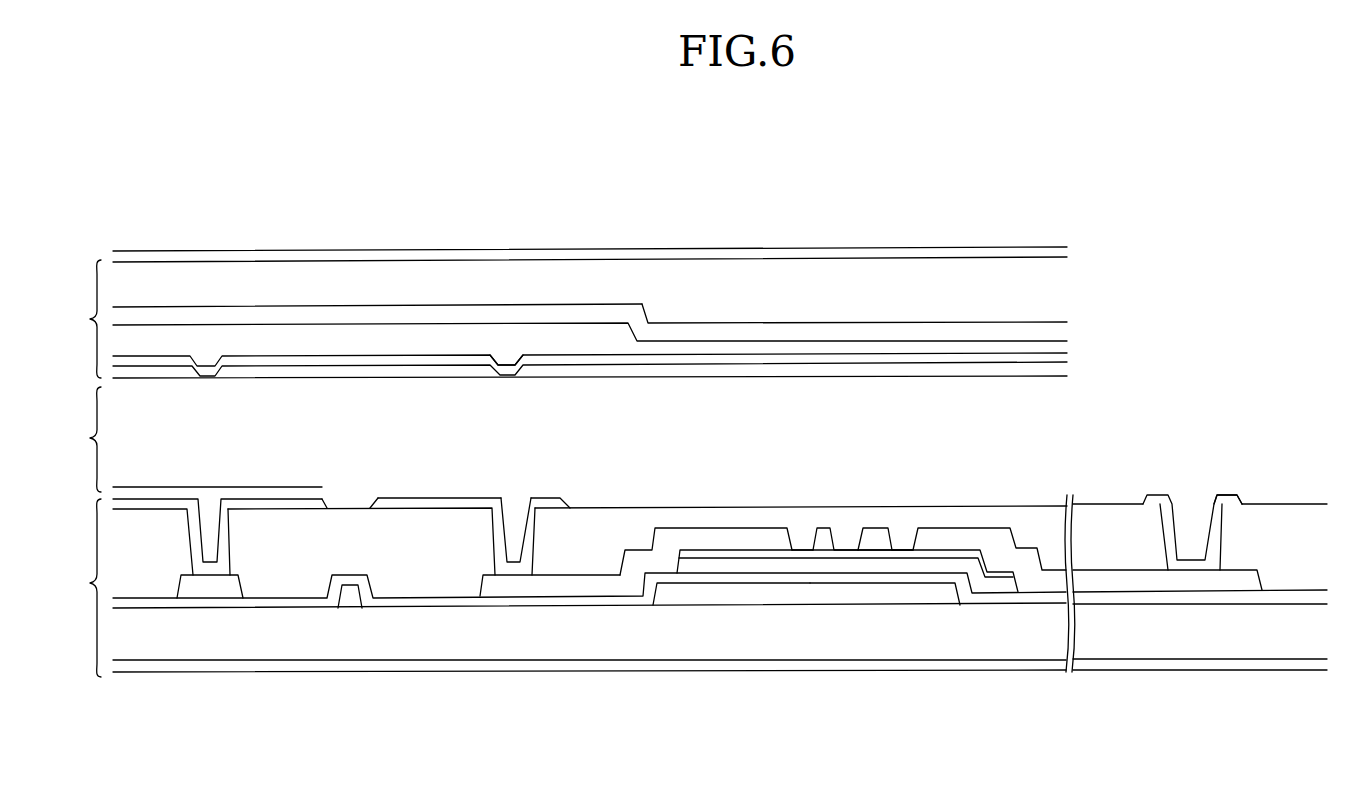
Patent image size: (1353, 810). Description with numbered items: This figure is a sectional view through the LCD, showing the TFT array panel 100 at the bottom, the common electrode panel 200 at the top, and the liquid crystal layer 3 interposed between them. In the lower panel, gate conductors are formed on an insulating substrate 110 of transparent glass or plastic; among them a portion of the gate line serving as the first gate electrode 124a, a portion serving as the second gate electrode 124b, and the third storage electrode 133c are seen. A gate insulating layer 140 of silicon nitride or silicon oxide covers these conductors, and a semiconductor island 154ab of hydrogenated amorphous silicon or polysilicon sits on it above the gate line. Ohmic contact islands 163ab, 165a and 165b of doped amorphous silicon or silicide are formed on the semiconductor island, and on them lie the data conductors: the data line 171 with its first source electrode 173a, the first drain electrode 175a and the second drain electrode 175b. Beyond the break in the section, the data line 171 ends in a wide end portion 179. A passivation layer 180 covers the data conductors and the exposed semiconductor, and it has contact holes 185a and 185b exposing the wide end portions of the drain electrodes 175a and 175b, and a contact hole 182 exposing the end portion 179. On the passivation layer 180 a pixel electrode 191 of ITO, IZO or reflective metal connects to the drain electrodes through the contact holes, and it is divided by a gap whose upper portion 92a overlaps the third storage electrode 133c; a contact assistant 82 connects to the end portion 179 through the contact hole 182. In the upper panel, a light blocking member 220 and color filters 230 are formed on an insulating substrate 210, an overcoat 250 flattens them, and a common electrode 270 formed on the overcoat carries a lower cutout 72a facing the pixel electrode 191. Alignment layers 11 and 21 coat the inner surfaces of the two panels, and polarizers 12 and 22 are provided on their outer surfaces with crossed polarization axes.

The polarizer 22 is at (187, 256).
The insulating substrate 210 is at (260, 270).
The color filter 230 is at (337, 315).
The light blocking member 220 is at (743, 314).
The overcoat 250 is at (488, 340).
The common electrode 270 is at (390, 360).
The lower cutout 72a is at (516, 373).
The alignment layer 21 is at (637, 371).
The common electrode panel 200 is at (78, 319).
The liquid crystal layer 3 is at (88, 439).
The TFT array panel 100 is at (79, 588).
The alignment layer 11 is at (403, 487).
The contact hole 185a is at (200, 523).
The upper portion of gap 92a is at (328, 503).
The pixel electrode 191 is at (450, 498).
The contact hole 185b is at (496, 530).
The passivation layer 180 is at (278, 568).
The first drain electrode 175a is at (210, 590).
The second drain electrode 175b is at (720, 535).
The first source electrode 173a is at (823, 535).
The data line 171 is at (935, 535).
The ohmic contact island 165b is at (725, 555).
The ohmic contact island 163ab is at (828, 562).
The ohmic contact island 165a is at (885, 556).
The semiconductor island 154ab is at (765, 567).
The gate insulating layer 140 is at (583, 601).
The third storage electrode 133c is at (350, 600).
The second gate electrode 124b is at (670, 600).
The first gate electrode 124a is at (858, 597).
The insulating substrate 110 is at (432, 650).
The polarizer 12 is at (478, 665).
The contact hole 182 is at (1170, 535).
The contact assistant 82 is at (1225, 500).
The end portion 179 is at (1205, 575).